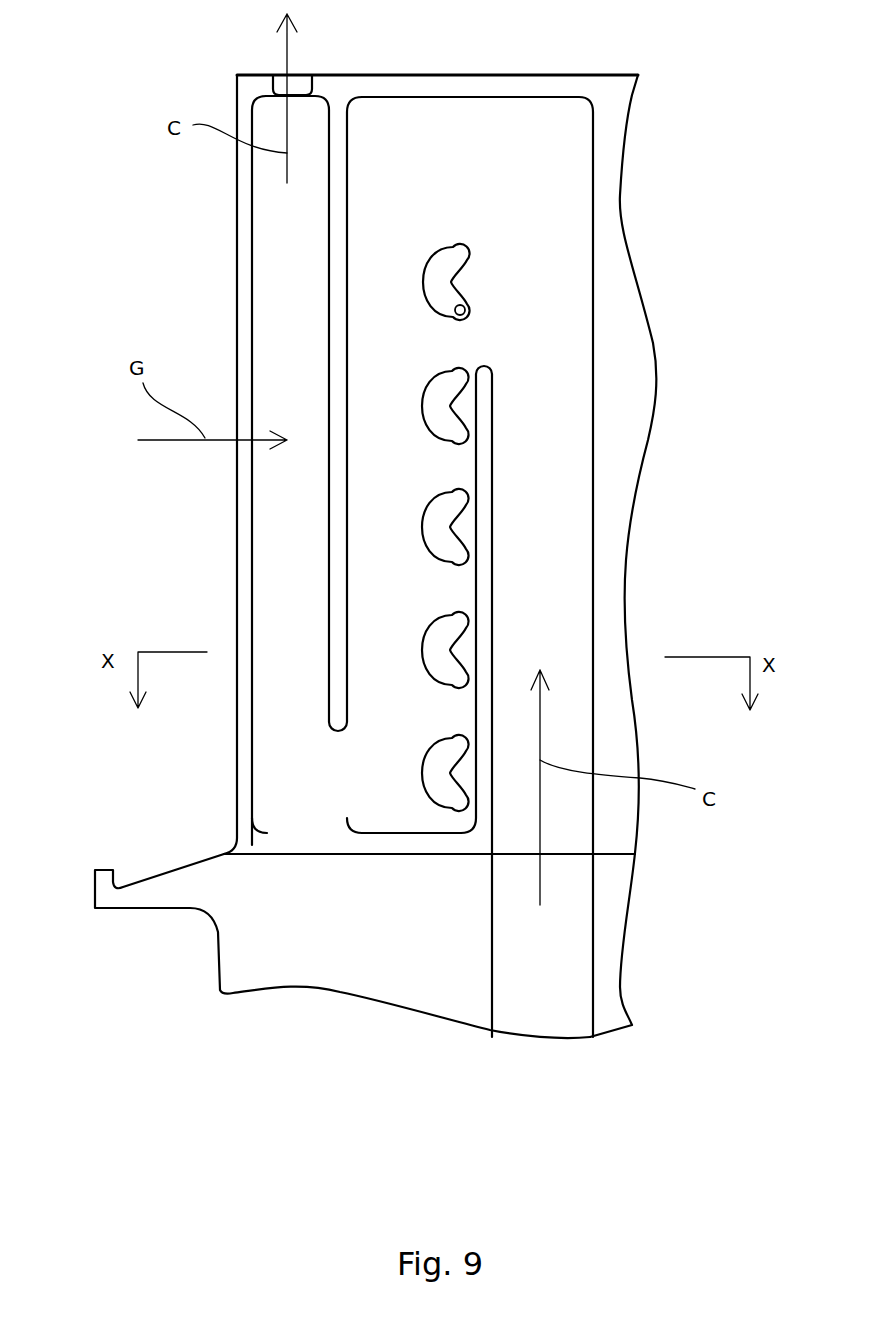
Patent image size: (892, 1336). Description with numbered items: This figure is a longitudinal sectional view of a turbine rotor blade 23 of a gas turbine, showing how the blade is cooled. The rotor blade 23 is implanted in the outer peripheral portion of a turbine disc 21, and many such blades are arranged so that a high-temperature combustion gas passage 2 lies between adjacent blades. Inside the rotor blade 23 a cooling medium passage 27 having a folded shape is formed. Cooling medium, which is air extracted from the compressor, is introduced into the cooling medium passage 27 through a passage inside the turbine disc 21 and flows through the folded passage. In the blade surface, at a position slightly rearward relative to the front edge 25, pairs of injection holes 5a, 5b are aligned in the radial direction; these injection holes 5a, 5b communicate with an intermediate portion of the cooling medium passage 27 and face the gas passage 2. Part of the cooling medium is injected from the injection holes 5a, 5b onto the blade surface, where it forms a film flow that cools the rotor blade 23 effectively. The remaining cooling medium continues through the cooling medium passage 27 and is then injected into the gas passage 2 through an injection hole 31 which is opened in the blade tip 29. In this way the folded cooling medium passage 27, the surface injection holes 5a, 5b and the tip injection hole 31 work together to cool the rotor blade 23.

The high-temperature gas passage 2 is at (740, 438).
The injection hole 5a is at (455, 250).
The injection hole 5b is at (466, 312).
The turbine disc 21 is at (165, 882).
The rotor blade 23 is at (640, 95).
The front edge 25 is at (237, 560).
The cooling medium passage 27 is at (555, 528).
The blade tip 29 is at (478, 70).
The injection hole 31 is at (300, 78).